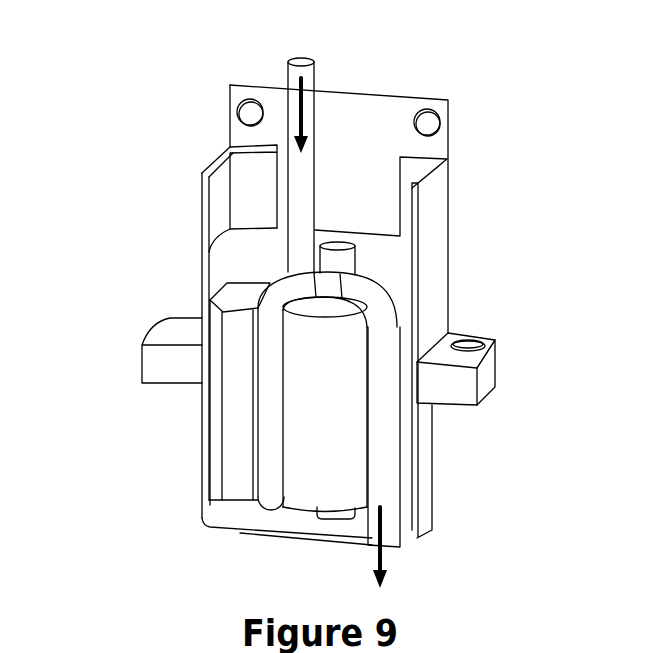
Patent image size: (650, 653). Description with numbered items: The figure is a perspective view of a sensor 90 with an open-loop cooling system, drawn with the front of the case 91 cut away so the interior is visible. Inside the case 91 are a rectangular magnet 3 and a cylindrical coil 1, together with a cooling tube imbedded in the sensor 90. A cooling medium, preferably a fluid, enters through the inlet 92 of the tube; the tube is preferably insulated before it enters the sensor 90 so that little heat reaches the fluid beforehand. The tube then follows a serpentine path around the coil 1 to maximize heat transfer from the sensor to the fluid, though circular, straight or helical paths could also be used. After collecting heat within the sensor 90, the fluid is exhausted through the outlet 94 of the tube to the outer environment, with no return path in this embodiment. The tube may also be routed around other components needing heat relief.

The sensor 90 is at (92, 175).
The inlet 92 is at (320, 80).
The case 91 is at (458, 380).
The coil 1 is at (357, 450).
The magnet 3 is at (236, 452).
The outlet 94 is at (403, 554).